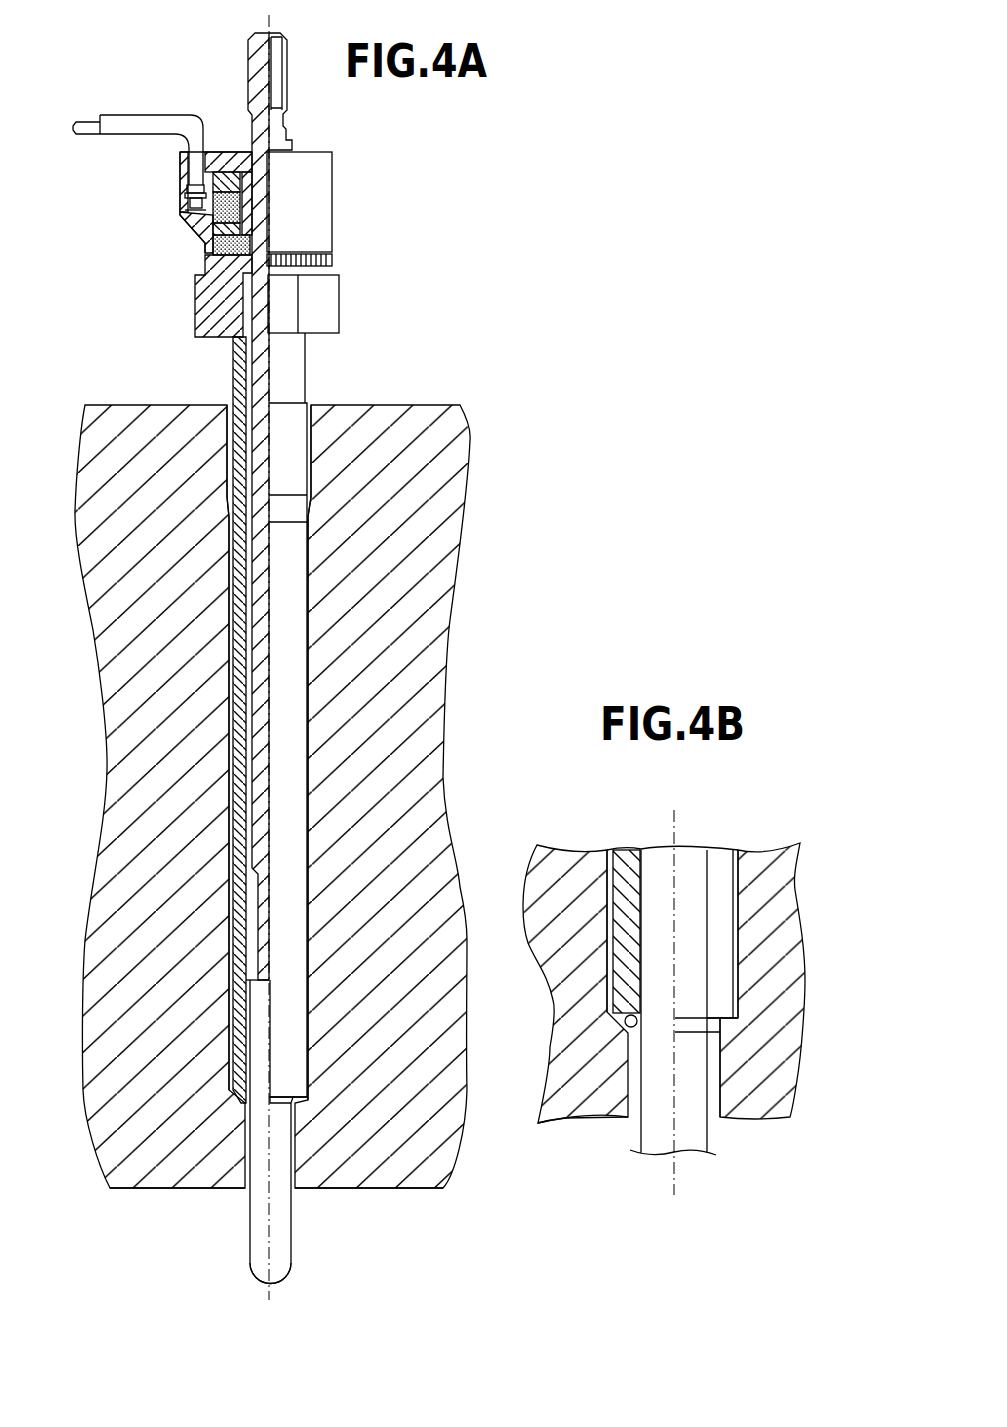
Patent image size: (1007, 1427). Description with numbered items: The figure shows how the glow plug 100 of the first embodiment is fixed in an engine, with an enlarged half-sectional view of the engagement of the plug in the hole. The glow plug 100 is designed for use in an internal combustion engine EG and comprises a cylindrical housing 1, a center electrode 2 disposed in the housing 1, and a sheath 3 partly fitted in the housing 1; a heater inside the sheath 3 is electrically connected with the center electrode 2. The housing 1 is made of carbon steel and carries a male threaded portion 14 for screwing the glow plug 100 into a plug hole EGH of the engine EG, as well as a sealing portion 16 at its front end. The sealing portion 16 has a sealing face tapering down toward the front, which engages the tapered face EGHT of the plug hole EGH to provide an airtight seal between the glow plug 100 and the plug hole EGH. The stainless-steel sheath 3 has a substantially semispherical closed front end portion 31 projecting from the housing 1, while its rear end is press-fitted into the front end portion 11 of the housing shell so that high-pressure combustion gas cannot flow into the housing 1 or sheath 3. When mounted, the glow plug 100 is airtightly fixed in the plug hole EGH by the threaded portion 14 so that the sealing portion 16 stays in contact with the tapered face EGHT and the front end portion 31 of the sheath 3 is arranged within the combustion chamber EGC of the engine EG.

In FIG. 4A, the glow plug 100 is at (293, 662).
In FIG. 4A, the housing 1 is at (294, 662).
In FIG. 4A, the center electrode 2 is at (258, 365).
In FIG. 4A, the sheath 3 is at (331, 1136).
In FIG. 4B, the sheath 3 is at (693, 1137).
In FIG. 4A, the front end portion of the sheath 31 is at (293, 1276).
In FIG. 4A, the front end portion of the housing shell 11 is at (296, 1015).
In FIG. 4B, the front end portion of the housing shell 11 is at (683, 867).
In FIG. 4A, the male threaded portion 14 is at (227, 485).
In FIG. 4A, the sealing portion 16 is at (279, 1103).
In FIG. 4B, the sealing portion 16 is at (697, 1022).
In FIG. 4A, the internal combustion engine EG is at (105, 420).
In FIG. 4B, the internal combustion engine EG is at (565, 1080).
In FIG. 4A, the plug hole EGH is at (307, 670).
In FIG. 4B, the plug hole EGH is at (740, 902).
In FIG. 4A, the combustion chamber EGC is at (158, 1187).
In FIG. 4B, the tapered face EGHT is at (568, 1120).